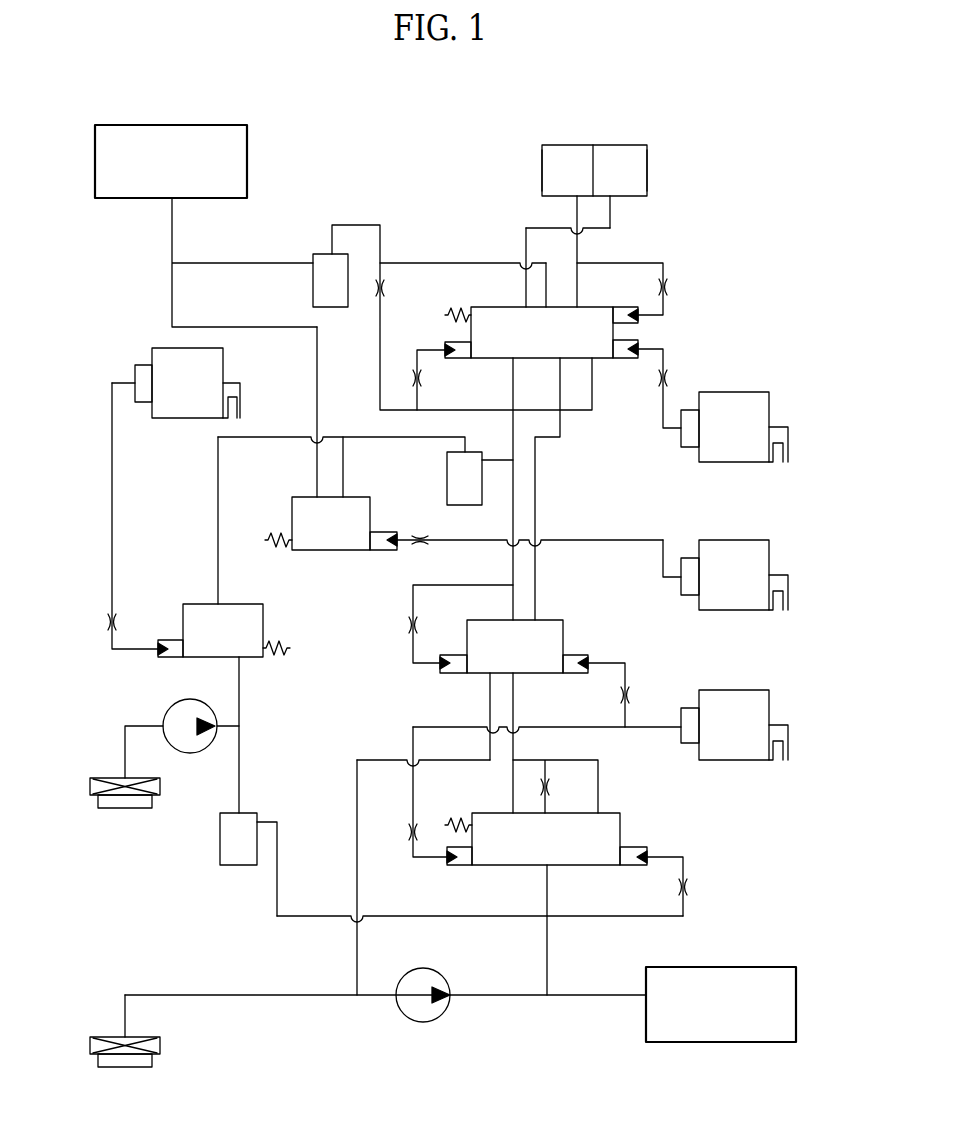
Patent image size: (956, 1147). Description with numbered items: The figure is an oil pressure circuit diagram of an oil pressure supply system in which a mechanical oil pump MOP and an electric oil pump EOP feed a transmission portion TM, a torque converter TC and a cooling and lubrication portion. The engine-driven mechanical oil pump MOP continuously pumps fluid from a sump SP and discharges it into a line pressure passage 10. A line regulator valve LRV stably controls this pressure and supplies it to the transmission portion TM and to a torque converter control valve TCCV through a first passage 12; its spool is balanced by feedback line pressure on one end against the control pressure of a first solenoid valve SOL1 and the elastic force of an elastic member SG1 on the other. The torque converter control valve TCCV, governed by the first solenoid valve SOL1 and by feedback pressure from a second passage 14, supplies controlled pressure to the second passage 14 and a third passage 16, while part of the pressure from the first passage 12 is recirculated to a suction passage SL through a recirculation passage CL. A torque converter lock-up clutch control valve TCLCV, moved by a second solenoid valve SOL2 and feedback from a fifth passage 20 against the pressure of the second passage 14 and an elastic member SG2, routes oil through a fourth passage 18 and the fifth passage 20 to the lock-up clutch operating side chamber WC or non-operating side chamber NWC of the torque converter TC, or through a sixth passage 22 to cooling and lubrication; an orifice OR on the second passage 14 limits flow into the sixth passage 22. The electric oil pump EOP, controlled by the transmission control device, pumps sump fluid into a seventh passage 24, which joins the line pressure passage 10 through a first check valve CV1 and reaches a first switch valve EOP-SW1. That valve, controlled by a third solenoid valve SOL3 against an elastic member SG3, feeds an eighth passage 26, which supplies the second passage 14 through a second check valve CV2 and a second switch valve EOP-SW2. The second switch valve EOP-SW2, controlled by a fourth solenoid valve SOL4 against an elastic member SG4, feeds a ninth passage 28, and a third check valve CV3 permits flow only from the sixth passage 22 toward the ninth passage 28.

The line pressure passage 10 is at (523, 995).
The first passage 12 is at (515, 693).
The second passage 14 is at (513, 561).
The third passage 16 is at (535, 561).
The fourth passage 18 is at (526, 236).
The fifth passage 20 is at (579, 245).
The sixth passage 22 is at (418, 263).
The seventh passage 24 is at (239, 745).
The eighth passage 26 is at (218, 487).
The ninth passage 28 is at (317, 386).
The torque converter TC is at (662, 144).
The lock-up clutch non-operating side chamber NWC is at (542, 172).
The lock-up clutch operating side chamber WC is at (647, 172).
The first check valve CV1 is at (220, 852).
The second check valve CV2 is at (447, 473).
The third check valve CV3 is at (313, 297).
The orifice OR is at (375, 296).
The elastic member SG1 is at (460, 820).
The elastic member SG2 is at (445, 317).
The elastic member SG3 is at (290, 648).
The elastic member SG4 is at (275, 535).
The torque converter lock-up clutch control valve TCLCV is at (600, 360).
The torque converter control valve TCCV is at (563, 628).
The line regulator valve LRV is at (622, 823).
The first solenoid valve SOL1 is at (734, 725).
The second solenoid valve SOL2 is at (734, 427).
The third solenoid valve SOL3 is at (176, 383).
The fourth solenoid valve SOL4 is at (725, 575).
The first switch valve EOP-SW1 is at (198, 604).
The second switch valve EOP-SW2 is at (325, 550).
The electric oil pump EOP is at (190, 748).
The mechanical oil pump MOP is at (423, 1022).
The sump SP is at (125, 810).
The suction passage SL is at (223, 997).
The recirculation passage CL is at (380, 760).
The transmission portion TM is at (721, 967).